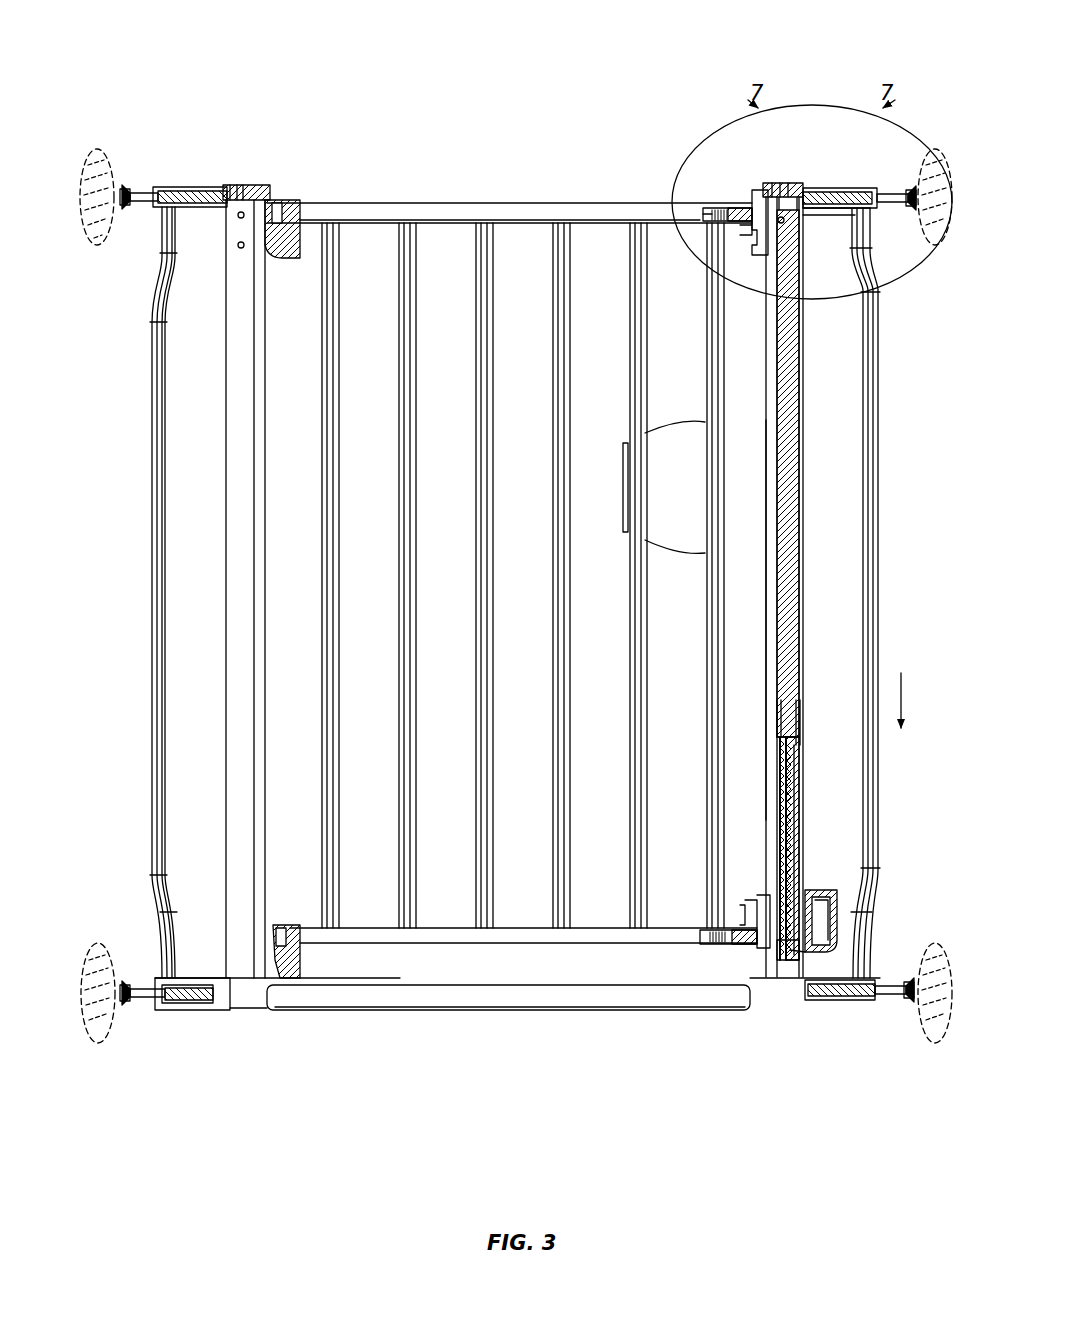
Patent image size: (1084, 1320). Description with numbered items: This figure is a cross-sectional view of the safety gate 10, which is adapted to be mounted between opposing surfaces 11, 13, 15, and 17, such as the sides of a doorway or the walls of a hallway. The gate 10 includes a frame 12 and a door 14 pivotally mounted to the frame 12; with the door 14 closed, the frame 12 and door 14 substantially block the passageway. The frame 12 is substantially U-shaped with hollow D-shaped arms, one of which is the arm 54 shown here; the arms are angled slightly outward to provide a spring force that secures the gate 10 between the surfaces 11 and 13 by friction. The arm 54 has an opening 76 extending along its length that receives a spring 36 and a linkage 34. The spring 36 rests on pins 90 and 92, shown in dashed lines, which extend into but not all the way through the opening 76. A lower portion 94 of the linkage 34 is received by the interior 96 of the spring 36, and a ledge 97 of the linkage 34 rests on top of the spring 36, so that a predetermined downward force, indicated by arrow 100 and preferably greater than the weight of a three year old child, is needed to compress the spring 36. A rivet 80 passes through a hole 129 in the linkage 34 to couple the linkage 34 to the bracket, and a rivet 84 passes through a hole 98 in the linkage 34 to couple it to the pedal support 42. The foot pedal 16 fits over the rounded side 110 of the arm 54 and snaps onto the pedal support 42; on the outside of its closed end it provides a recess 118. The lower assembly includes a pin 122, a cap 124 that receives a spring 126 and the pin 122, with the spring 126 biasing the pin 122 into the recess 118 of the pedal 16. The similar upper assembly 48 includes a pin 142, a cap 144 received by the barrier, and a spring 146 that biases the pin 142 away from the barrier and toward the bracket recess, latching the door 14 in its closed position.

The gate 10 is at (555, 42).
The opposing surface 11 is at (115, 148).
The frame 12 is at (880, 355).
The opposing surface 13 is at (920, 160).
The door 14 is at (552, 197).
The opposing surface 15 is at (112, 960).
The foot pedal 16 is at (810, 890).
The opposing surface 17 is at (920, 957).
The linkage 34 is at (803, 385).
The spring 36 is at (800, 755).
The pedal support 42 is at (818, 925).
The upper assembly 48 is at (734, 235).
The arm 54 is at (765, 620).
The opening 76 is at (786, 193).
The rivet 80 is at (782, 216).
The rivet 84 is at (805, 960).
The pin 90 is at (802, 830).
The pin 92 is at (819, 849).
The lower portion 94 is at (800, 790).
The interior 96 is at (800, 720).
The ledge 97 is at (796, 727).
The hole 98 is at (780, 950).
The arrow 100 is at (924, 700).
The rounded side 110 is at (765, 440).
The recess 118 is at (740, 920).
The pin 122 is at (748, 935).
The cap 124 is at (705, 945).
The spring 126 is at (738, 945).
The hole 129 is at (803, 219).
The pin 142 is at (735, 208).
The cap 144 is at (710, 206).
The spring 146 is at (721, 210).